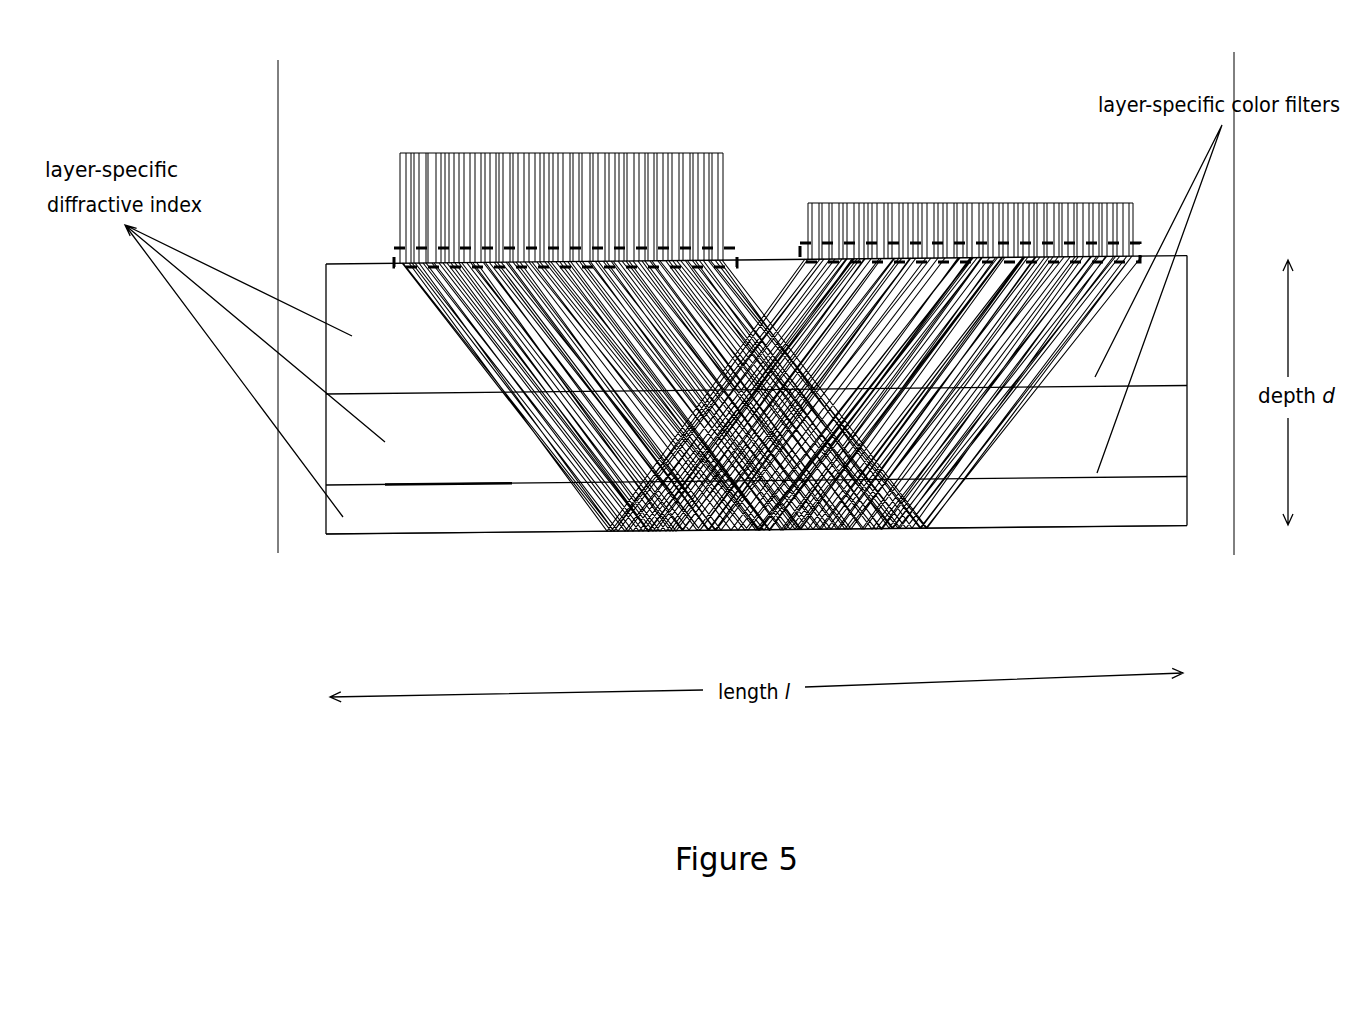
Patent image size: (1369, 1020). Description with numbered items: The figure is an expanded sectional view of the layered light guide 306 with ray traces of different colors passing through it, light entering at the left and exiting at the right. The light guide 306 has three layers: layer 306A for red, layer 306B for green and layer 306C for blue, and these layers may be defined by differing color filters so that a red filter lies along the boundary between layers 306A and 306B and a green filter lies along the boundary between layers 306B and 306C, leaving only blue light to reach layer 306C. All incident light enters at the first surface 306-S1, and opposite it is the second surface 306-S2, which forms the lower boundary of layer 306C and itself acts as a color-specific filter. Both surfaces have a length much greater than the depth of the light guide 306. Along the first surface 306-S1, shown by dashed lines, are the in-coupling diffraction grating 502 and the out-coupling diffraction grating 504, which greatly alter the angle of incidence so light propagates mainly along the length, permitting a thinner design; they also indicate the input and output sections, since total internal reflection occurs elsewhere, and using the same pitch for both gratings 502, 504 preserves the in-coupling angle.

The layered light guide 306 is at (256, 608).
The first surface 306-S1 is at (369, 246).
The second surface 306-S2 is at (385, 552).
The layer for red 306A is at (756, 374).
The layer for green 306B is at (756, 463).
The layer for blue 306C is at (756, 519).
The in-coupling diffraction grating 502 is at (400, 237).
The out-coupling diffraction grating 504 is at (800, 233).